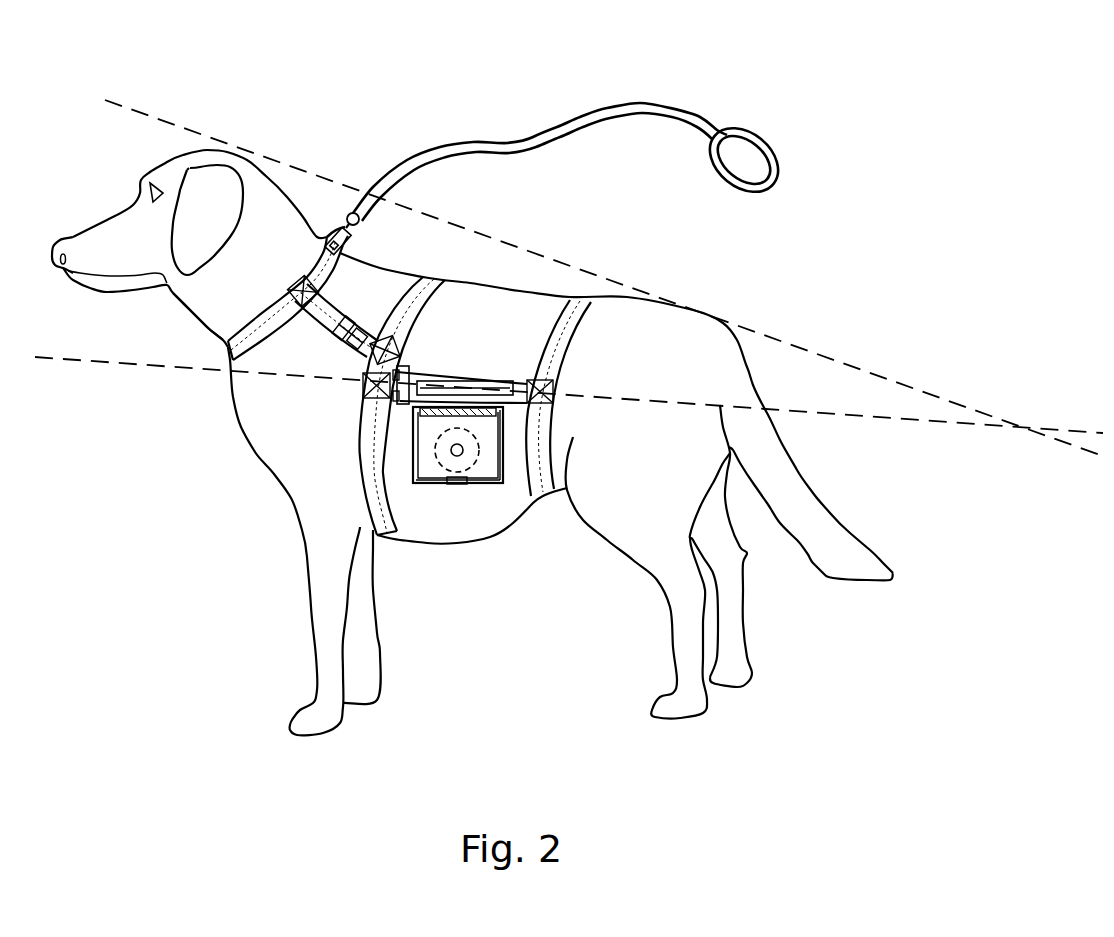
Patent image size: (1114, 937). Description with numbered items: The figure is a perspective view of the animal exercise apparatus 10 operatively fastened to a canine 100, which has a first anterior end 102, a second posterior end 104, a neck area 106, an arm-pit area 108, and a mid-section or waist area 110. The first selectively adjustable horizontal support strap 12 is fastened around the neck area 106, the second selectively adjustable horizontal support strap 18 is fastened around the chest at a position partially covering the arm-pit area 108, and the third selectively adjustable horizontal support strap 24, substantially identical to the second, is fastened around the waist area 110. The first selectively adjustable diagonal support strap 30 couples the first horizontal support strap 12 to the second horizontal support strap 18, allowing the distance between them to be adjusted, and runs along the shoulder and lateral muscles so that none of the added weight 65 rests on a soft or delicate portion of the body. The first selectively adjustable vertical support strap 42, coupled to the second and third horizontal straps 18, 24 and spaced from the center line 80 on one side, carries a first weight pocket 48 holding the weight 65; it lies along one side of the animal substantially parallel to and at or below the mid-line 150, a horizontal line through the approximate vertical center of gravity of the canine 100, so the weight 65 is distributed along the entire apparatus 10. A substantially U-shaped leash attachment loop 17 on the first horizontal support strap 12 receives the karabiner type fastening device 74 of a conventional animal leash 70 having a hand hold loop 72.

The animal exercise apparatus 10 is at (469, 423).
The first selectively adjustable horizontal support strap 12 is at (288, 291).
The leash attachment loop 17 is at (322, 243).
The second selectively adjustable horizontal support strap 18 is at (423, 278).
The third selectively adjustable horizontal support strap 24 is at (580, 324).
The first selectively adjustable diagonal support strap 30 is at (333, 311).
The first selectively adjustable vertical support strap 42 is at (477, 377).
The first weight pocket 48 is at (477, 515).
The weight 65 is at (460, 484).
The animal leash 70 is at (567, 166).
The hand hold loop 72 is at (757, 137).
The karabiner type fastening device 74 is at (343, 224).
The center line 80 is at (1072, 443).
The canine 100 is at (468, 415).
The first anterior end 102 is at (232, 156).
The second posterior end 104 is at (717, 340).
The neck area 106 is at (230, 347).
The arm-pit area 108 is at (374, 530).
The mid-section or waist area 110 is at (565, 424).
The mid-line 150 is at (1103, 433).